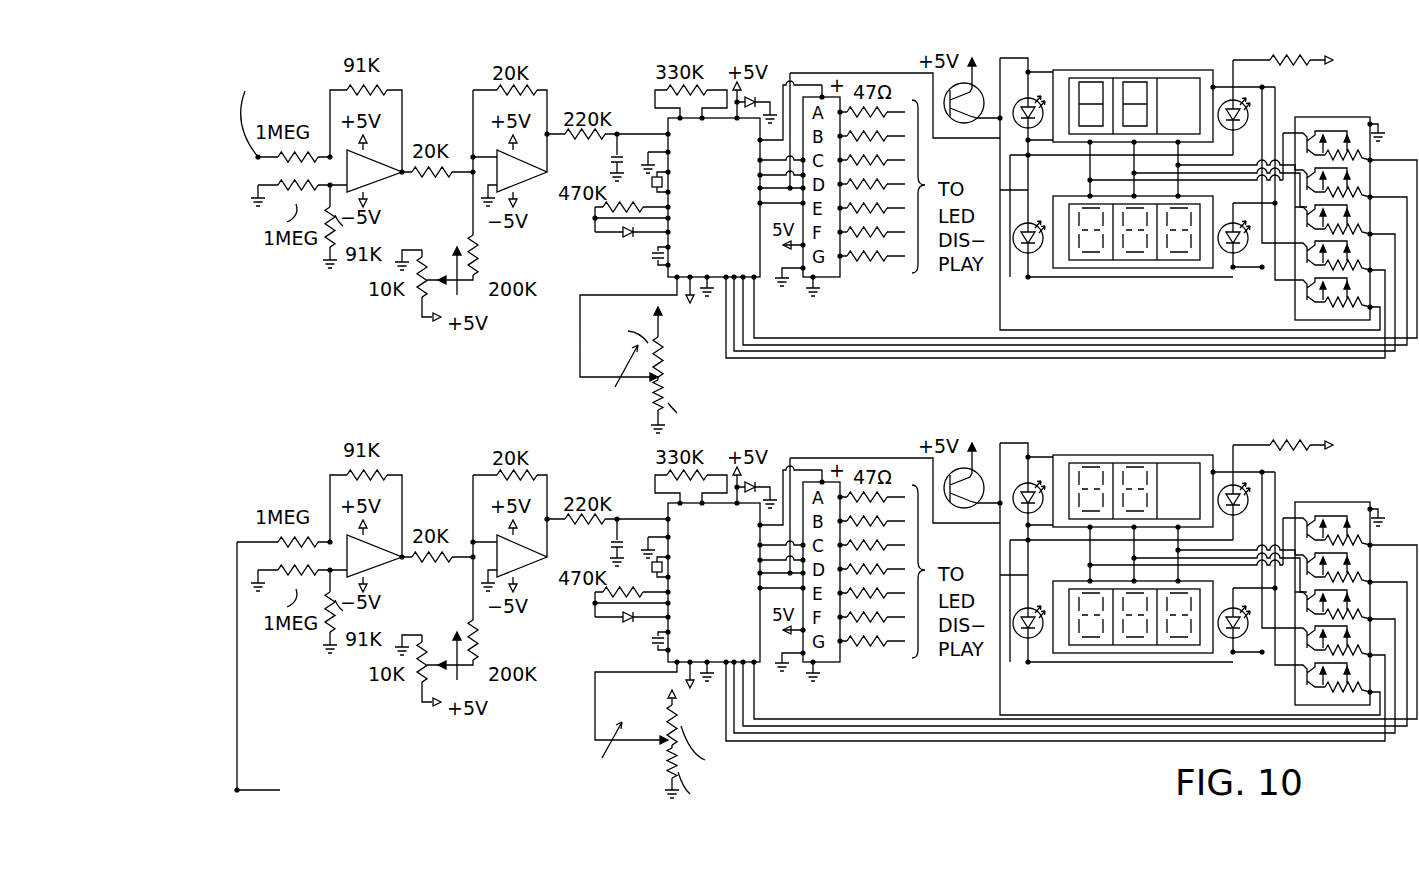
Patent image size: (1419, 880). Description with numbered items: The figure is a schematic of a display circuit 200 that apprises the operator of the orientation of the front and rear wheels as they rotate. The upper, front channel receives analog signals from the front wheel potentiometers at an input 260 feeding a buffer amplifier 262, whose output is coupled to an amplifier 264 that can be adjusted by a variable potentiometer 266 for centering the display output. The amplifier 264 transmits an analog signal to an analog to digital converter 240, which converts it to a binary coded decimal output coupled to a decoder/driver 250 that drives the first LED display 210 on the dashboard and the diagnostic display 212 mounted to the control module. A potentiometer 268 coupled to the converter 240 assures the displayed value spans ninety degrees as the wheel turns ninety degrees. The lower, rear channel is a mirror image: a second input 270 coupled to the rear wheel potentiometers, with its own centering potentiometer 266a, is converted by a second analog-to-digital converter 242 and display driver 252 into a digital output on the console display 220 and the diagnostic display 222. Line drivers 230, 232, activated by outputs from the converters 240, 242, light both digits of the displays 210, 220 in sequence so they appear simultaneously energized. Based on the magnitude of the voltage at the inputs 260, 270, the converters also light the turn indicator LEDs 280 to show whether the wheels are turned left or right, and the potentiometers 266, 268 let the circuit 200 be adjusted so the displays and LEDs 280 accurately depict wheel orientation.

The display circuit 200 is at (825, 426).
The first LED display 210 is at (1150, 82).
The additional display 212 is at (1076, 196).
The second LED display 220 is at (1150, 467).
The additional display 222 is at (1076, 581).
The line driver 230 is at (1357, 125).
The line driver 232 is at (1357, 510).
The analog to digital converter 240 is at (729, 203).
The second analog-to-digital converter 242 is at (729, 588).
The binary coded decimal to seven segment decoder/driver 250 is at (835, 278).
The display driver 252 is at (838, 663).
The input 260 is at (262, 111).
The buffer amplifier 262 is at (378, 176).
The amplifier 264 is at (523, 184).
The variable potentiometer 266 is at (431, 262).
The variable potentiometer 266a is at (452, 647).
The potentiometer 268 is at (661, 376).
The second input 270 is at (281, 672).
The turn indicator LED 280 is at (1020, 128).